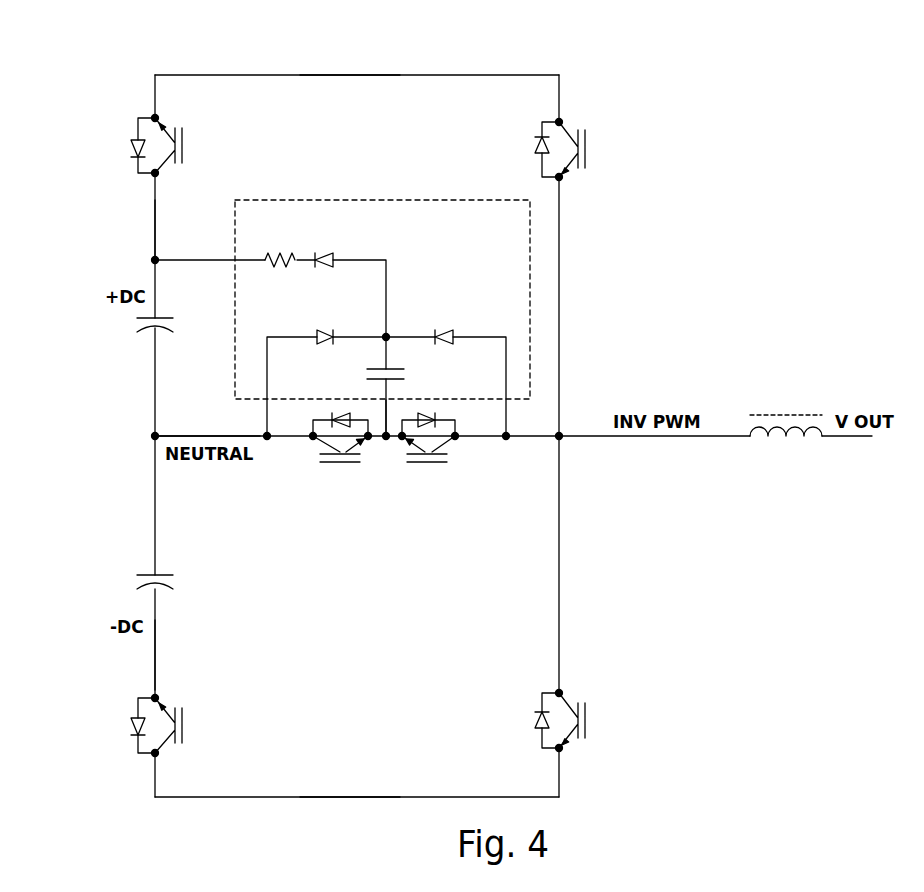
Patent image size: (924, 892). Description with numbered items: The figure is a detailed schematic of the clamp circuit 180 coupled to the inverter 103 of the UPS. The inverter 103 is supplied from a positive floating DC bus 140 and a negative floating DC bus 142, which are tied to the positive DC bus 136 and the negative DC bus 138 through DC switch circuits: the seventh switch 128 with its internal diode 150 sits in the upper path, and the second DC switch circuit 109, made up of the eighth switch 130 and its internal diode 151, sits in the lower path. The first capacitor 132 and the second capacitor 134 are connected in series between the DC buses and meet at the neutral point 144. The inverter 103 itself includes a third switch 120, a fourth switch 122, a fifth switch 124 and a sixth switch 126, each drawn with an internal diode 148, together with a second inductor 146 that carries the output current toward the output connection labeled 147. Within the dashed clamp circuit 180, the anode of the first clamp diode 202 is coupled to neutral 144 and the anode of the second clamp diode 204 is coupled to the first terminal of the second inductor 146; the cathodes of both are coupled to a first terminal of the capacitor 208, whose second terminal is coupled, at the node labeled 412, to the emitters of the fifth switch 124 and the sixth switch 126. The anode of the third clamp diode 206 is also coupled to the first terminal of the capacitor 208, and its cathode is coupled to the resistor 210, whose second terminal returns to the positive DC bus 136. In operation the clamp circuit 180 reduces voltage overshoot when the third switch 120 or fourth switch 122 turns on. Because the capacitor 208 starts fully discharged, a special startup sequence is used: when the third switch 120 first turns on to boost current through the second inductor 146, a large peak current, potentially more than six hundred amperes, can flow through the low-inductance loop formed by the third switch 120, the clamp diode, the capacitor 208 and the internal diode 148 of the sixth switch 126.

The inverter 103 is at (592, 77).
The second DC switch circuit 109 is at (188, 814).
The third switch 120 is at (588, 133).
The fourth switch 122 is at (588, 708).
The fifth switch 124 is at (444, 465).
The sixth switch 126 is at (322, 465).
The seventh switch 128 is at (186, 133).
The eighth switch 130 is at (186, 712).
The first capacitor 132 is at (181, 302).
The second capacitor 134 is at (152, 572).
The positive DC bus 136 is at (152, 256).
The negative DC bus 138 is at (153, 655).
The positive floating DC bus 140 is at (349, 78).
The negative floating DC bus 142 is at (362, 799).
The neutral point 144 is at (159, 432).
The second inductor 146 is at (822, 426).
The output node V OUT 147 is at (862, 438).
The internal diode 148 is at (538, 152).
The internal diode 150 is at (135, 147).
The internal diode 151 is at (135, 727).
The clamp circuit 180 is at (396, 216).
The first clamp diode 202 is at (318, 342).
The second clamp diode 204 is at (460, 336).
The third clamp diode 206 is at (326, 271).
The capacitor 208 is at (384, 367).
The resistor 210 is at (277, 271).
The neutral connection node 412 is at (386, 441).